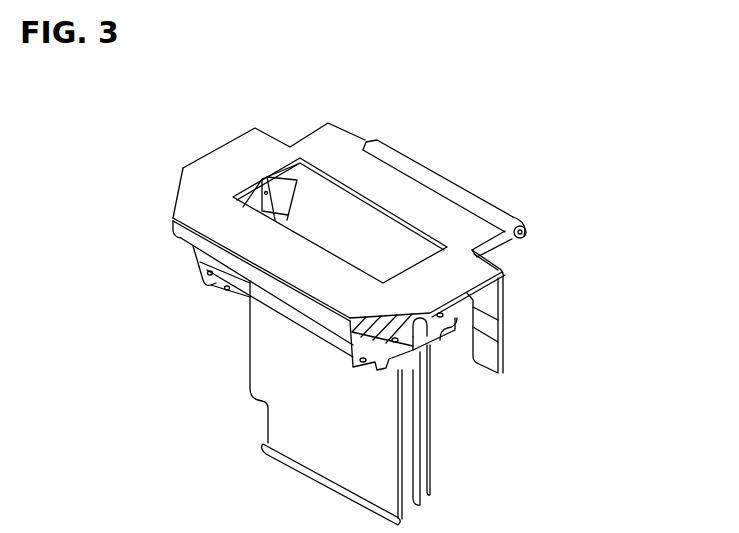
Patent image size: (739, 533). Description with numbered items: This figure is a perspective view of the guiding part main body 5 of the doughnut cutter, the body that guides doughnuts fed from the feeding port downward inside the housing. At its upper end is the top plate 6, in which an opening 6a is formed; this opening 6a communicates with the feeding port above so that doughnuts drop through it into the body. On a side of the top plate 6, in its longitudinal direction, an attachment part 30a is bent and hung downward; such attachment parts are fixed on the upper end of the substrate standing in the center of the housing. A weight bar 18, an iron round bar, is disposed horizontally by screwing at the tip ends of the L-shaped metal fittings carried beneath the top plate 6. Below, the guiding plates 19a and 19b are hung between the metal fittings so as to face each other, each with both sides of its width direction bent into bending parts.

The guiding part main body 5 is at (424, 112).
The top plate 6 is at (249, 157).
The opening 6a is at (340, 198).
The weight bar 18 is at (443, 177).
The guiding plate 19a is at (313, 405).
The guiding plate 19b is at (427, 397).
The attachment part 30a is at (503, 352).